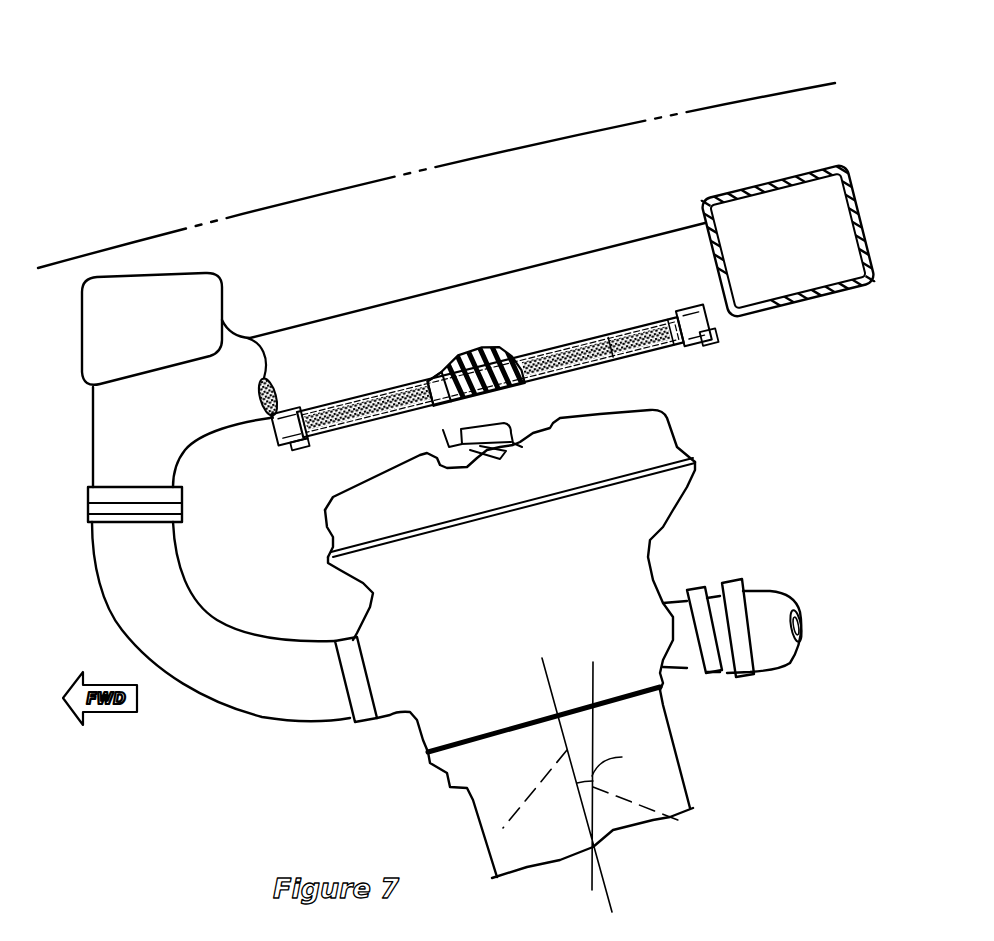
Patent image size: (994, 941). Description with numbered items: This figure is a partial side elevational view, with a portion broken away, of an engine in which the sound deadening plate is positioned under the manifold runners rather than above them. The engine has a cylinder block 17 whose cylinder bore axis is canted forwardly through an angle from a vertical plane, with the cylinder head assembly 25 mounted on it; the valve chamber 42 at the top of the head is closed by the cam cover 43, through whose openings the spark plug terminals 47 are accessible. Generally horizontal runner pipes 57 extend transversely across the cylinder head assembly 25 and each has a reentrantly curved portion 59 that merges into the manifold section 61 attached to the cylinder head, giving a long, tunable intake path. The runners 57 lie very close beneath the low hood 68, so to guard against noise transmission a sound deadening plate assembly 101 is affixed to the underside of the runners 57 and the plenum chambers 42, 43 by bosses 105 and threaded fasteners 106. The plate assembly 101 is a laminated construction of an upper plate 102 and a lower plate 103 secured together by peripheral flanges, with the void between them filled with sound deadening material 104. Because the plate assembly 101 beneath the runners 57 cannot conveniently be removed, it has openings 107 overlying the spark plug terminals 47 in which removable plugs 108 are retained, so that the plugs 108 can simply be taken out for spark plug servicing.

The cylinder block 17 is at (665, 757).
The cylinder head assembly 25 is at (650, 540).
The valve chamber 42 is at (797, 203).
The cam cover 43 is at (97, 338).
The spark plug terminal 47 is at (490, 463).
The runner pipe 57 is at (467, 297).
The reentrantly curved portion 59 is at (253, 357).
The manifold section 61 is at (235, 683).
The hood 68 is at (565, 132).
The sound deadening plate assembly 101 is at (527, 388).
The upper plate 102 is at (337, 403).
The lower plate 103 is at (377, 425).
The sound deadening material 104 is at (617, 360).
The boss 105 is at (270, 417).
The threaded fastener 106 is at (290, 447).
The opening 107 is at (443, 374).
The removable plug 108 is at (487, 360).